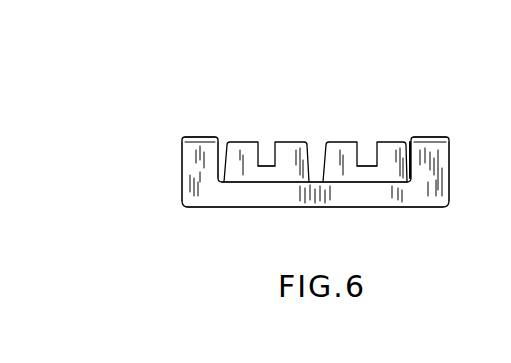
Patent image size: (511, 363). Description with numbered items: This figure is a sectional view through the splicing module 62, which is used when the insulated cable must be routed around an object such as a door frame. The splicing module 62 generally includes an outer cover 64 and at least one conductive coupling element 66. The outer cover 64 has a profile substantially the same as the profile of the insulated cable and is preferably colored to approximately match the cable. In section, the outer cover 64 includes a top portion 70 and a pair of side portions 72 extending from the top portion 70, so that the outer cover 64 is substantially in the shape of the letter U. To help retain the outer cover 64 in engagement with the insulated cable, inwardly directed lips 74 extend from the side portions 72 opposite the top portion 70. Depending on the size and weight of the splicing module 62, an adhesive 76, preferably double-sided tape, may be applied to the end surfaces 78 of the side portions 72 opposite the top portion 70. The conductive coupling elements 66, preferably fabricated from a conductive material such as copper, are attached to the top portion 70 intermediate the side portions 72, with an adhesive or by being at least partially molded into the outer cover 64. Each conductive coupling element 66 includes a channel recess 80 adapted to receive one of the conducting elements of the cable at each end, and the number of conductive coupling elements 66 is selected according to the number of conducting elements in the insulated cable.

The splicing module 62 is at (454, 212).
The outer cover 64 is at (186, 208).
The conductive coupling element 66 is at (333, 152).
The top portion 70 is at (407, 197).
The side portion 72 is at (190, 165).
The inwardly directed lip 74 is at (217, 142).
The adhesive 76 is at (200, 136).
The end surface 78 is at (188, 137).
The channel recess 80 is at (266, 148).